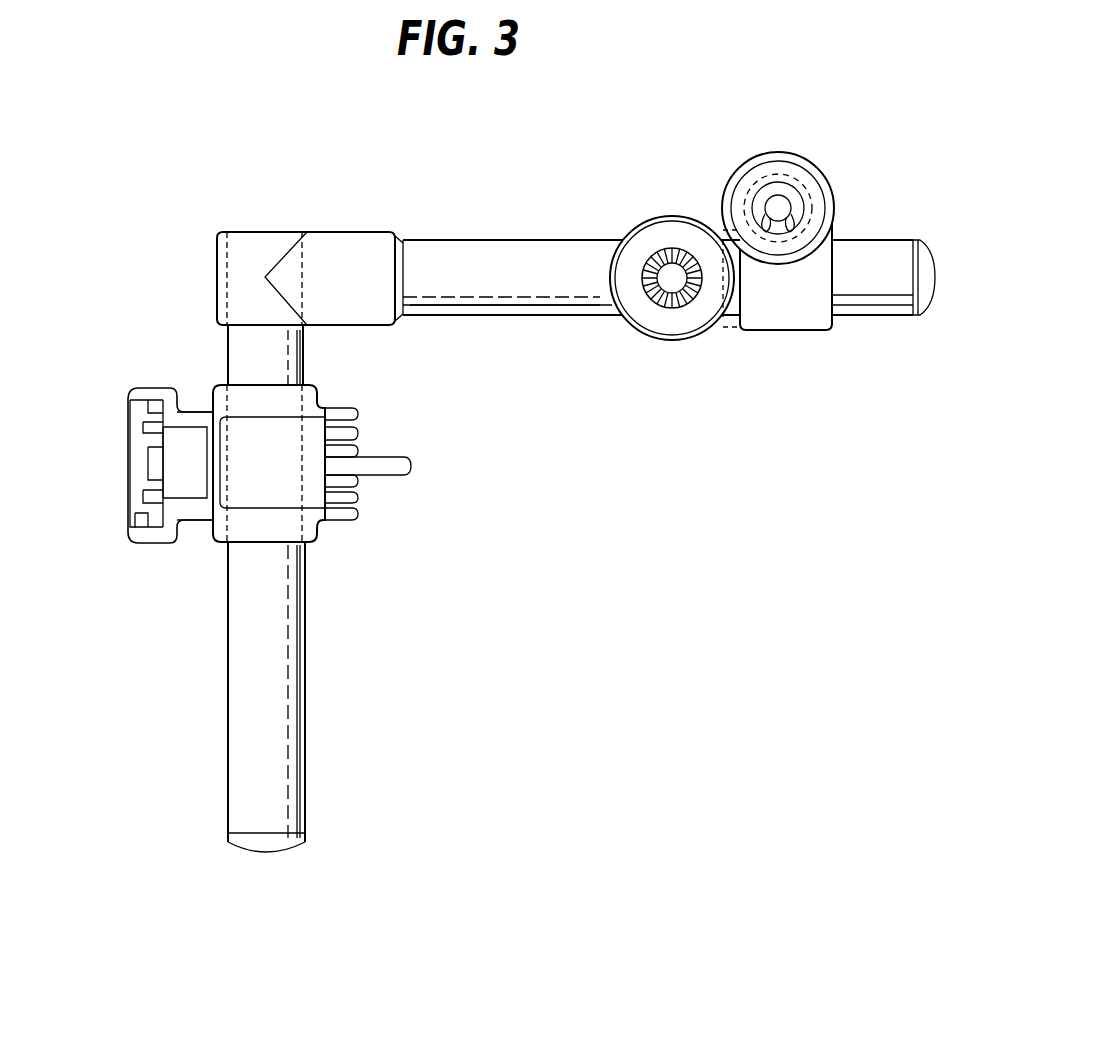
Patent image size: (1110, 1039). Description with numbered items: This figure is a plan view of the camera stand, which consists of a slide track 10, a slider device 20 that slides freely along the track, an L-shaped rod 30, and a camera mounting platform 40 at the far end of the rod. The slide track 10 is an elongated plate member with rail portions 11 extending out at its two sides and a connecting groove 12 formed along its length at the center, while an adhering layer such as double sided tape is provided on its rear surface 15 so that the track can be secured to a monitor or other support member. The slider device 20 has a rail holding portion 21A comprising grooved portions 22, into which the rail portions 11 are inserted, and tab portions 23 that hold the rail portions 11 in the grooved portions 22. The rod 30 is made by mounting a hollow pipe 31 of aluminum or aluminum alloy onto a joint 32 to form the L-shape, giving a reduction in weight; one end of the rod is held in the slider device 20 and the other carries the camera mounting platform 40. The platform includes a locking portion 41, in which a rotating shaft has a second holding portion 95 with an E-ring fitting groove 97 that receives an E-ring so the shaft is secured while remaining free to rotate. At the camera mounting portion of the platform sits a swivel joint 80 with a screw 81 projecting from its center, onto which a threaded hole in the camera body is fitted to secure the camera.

The slide track 10 is at (135, 438).
The rail portions 11 is at (152, 403).
The connecting groove 12 is at (170, 455).
The rear surface 15 is at (137, 467).
The slider device 20 is at (333, 543).
The rail holding portion 21A is at (197, 533).
The grooved portions 22 is at (143, 413).
The tab portions 23 is at (143, 425).
The rod 30 is at (495, 300).
The pipe 31 is at (537, 255).
The joint 32 is at (338, 250).
The camera mounting platform 40 is at (828, 347).
The locking portion 41 is at (803, 302).
The swivel joint 80 is at (648, 201).
The screw 81 is at (667, 283).
The second holding portion 95 is at (811, 188).
The E-ring fitting groove 97 is at (798, 200).